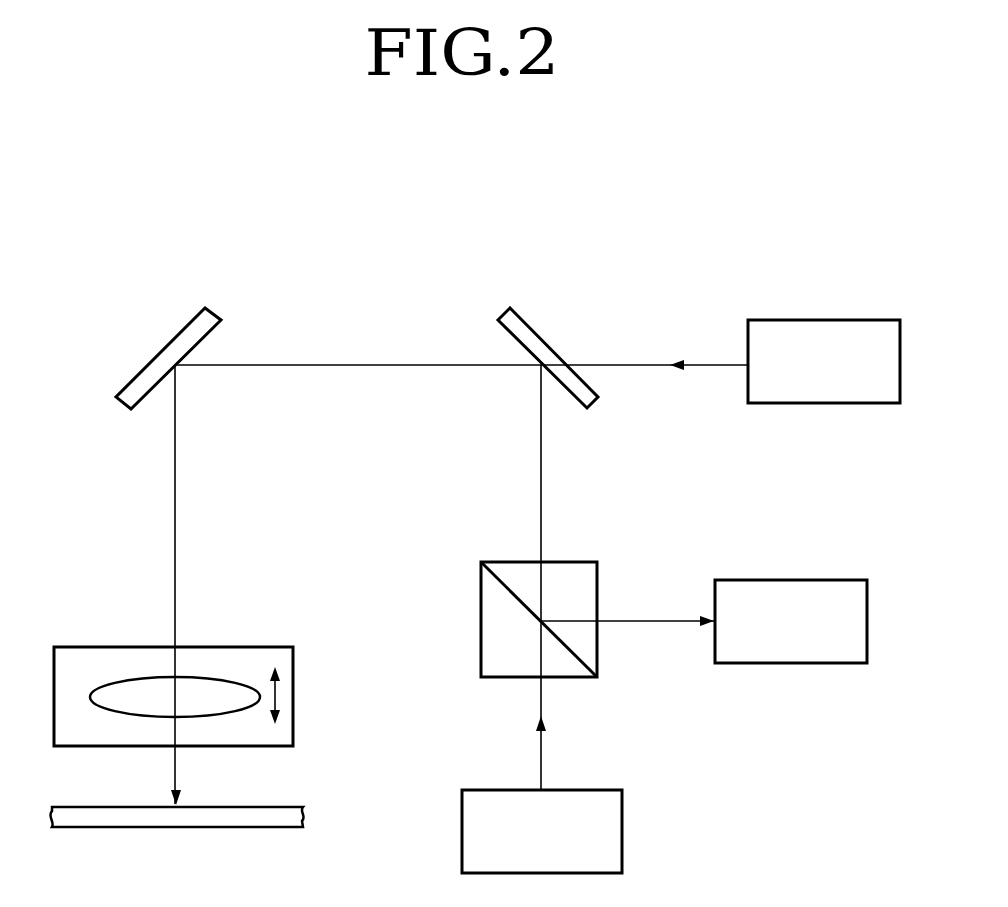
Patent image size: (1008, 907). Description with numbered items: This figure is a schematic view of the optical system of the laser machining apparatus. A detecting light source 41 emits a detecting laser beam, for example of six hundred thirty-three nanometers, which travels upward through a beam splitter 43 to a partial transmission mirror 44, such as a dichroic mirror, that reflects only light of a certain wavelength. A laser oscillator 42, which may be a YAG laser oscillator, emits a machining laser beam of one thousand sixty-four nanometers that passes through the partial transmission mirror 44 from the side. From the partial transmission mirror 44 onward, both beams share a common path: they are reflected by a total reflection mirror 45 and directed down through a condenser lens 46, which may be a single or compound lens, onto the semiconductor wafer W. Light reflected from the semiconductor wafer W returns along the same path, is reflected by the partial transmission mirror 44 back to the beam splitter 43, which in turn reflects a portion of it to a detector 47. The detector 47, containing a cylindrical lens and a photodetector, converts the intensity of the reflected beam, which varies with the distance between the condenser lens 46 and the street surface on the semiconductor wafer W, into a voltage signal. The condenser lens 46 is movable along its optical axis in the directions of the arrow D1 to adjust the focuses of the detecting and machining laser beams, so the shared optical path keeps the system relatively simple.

The detecting light source 41 is at (593, 790).
The laser oscillator 42 is at (802, 320).
The beam splitter 43 is at (510, 560).
The partial transmission mirror 44 is at (550, 348).
The total reflection mirror 45 is at (158, 352).
The condenser lens 46 is at (198, 677).
The detector 47 is at (788, 580).
The arrow D1 is at (282, 695).
The semiconductor wafer W is at (228, 822).